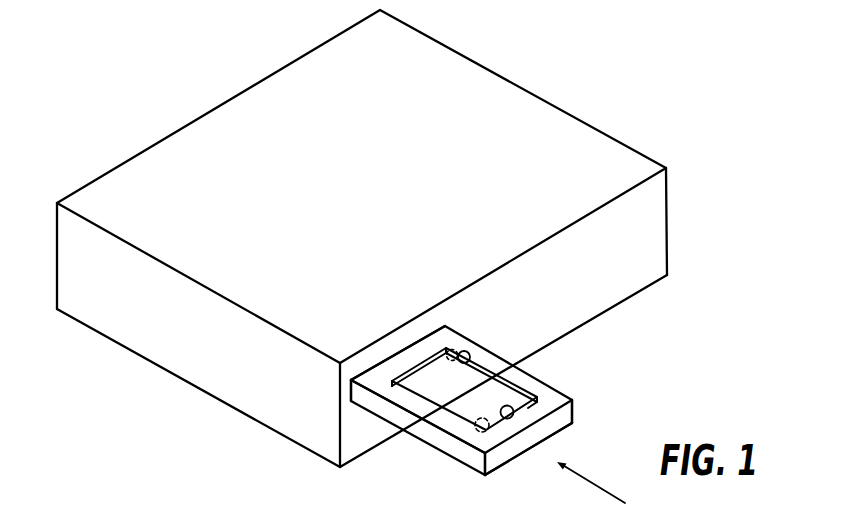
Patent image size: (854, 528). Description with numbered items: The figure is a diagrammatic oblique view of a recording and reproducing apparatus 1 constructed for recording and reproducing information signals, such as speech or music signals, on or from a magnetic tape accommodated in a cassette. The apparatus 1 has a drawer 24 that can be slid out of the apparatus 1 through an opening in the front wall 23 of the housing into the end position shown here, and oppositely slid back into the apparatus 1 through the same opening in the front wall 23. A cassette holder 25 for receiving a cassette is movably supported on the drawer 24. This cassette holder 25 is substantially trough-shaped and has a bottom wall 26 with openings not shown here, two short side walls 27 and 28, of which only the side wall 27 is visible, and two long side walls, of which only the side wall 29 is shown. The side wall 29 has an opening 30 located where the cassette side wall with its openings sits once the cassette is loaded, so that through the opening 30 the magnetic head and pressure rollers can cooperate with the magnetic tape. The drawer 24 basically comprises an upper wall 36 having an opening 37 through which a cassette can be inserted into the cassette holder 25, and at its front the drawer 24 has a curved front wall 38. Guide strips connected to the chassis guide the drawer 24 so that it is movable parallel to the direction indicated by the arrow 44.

The recording and reproducing apparatus 1 is at (589, 106).
The front wall 23 is at (635, 272).
The drawer 24 is at (578, 411).
The cassette holder 25 is at (497, 391).
The bottom wall 26 is at (433, 393).
The short side wall 27 is at (395, 383).
The short side wall 28 is at (470, 430).
The long side wall 29 is at (453, 349).
The opening 30 is at (469, 351).
The upper wall 36 is at (489, 437).
The opening 37 is at (511, 419).
The curved front wall 38 is at (552, 430).
The arrow 44 is at (593, 489).